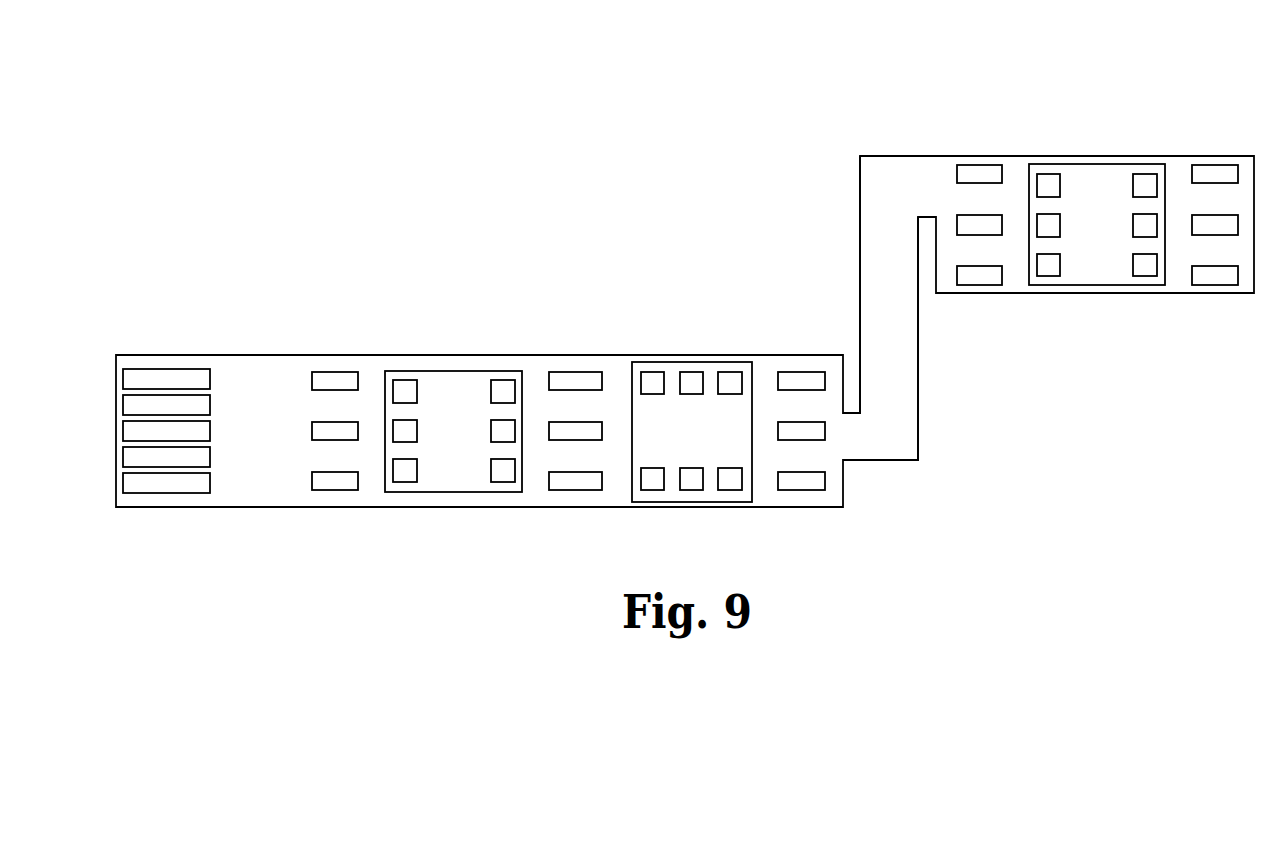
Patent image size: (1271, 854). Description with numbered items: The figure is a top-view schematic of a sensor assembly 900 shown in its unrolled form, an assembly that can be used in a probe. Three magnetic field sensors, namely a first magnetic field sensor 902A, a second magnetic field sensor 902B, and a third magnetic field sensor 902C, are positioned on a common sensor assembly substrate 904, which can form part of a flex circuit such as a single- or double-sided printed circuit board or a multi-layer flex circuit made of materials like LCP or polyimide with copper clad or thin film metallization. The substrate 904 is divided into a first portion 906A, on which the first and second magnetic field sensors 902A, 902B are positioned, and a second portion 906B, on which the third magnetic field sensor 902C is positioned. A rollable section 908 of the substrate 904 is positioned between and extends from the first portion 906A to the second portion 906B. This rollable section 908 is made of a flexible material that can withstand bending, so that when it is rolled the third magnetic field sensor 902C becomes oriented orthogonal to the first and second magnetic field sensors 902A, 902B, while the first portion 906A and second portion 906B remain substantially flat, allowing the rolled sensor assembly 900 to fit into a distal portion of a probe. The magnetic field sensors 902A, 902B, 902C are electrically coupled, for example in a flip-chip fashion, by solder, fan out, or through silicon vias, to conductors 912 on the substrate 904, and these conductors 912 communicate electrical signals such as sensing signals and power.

The sensor assembly 900 is at (229, 73).
The sensor assembly substrate 904 is at (231, 494).
The first portion 906A is at (291, 370).
The second portion 906B is at (930, 175).
The first magnetic field sensor 902A is at (452, 379).
The second magnetic field sensor 902B is at (673, 368).
The third magnetic field sensor 902C is at (1098, 170).
The rollable section 908 is at (872, 237).
The conductors 912 is at (575, 485).